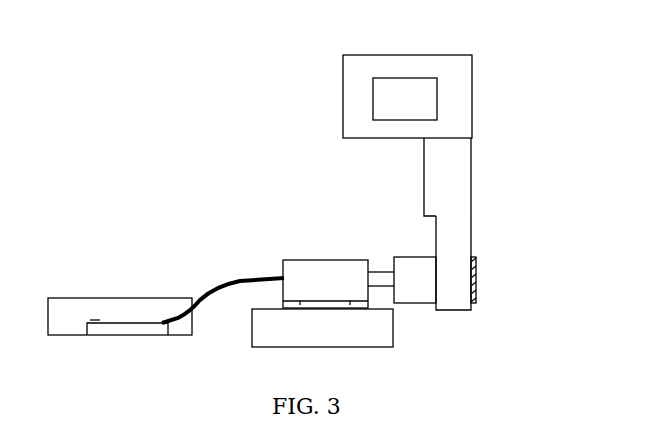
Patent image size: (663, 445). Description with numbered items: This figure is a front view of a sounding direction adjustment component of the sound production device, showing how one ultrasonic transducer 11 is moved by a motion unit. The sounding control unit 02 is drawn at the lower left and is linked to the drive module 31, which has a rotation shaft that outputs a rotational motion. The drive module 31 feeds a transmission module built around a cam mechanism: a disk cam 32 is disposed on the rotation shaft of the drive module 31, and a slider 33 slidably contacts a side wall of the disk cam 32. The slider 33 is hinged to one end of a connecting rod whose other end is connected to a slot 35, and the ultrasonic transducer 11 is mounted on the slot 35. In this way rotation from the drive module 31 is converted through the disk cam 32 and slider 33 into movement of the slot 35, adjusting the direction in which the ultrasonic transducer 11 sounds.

The sounding control unit 02 is at (127, 297).
The ultrasonic transducer 11 is at (437, 101).
The drive module 31 is at (328, 258).
The disk cam 32 is at (471, 250).
The slider 33 is at (471, 186).
The slot 35 is at (343, 100).